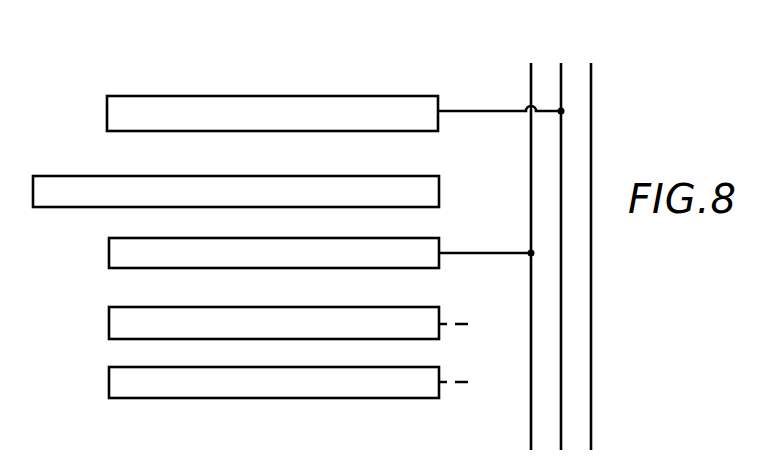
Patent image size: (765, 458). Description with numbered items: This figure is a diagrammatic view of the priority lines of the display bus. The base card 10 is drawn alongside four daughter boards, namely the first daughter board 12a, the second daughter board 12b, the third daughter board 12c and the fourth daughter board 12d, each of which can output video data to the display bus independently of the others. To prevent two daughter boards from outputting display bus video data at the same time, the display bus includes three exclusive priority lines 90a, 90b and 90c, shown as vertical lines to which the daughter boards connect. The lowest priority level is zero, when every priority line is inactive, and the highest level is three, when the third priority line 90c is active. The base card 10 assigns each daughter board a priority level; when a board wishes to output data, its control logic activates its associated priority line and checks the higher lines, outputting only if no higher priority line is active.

The base card 10 is at (58, 193).
The first daughter board 12a is at (128, 253).
The second daughter board 12b is at (125, 320).
The third daughter board 12c is at (127, 380).
The fourth daughter board 12d is at (120, 117).
The first priority line 90a is at (531, 95).
The second priority line 90b is at (561, 80).
The third priority line 90c is at (591, 102).